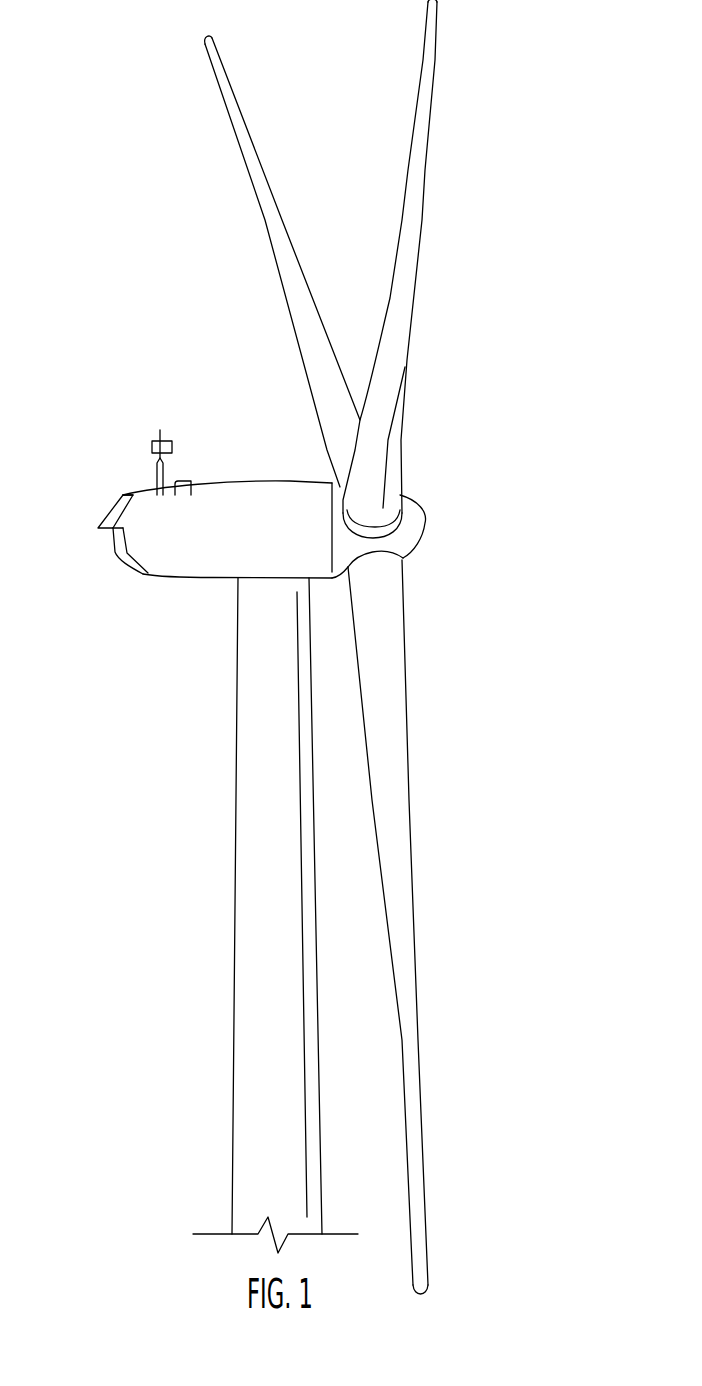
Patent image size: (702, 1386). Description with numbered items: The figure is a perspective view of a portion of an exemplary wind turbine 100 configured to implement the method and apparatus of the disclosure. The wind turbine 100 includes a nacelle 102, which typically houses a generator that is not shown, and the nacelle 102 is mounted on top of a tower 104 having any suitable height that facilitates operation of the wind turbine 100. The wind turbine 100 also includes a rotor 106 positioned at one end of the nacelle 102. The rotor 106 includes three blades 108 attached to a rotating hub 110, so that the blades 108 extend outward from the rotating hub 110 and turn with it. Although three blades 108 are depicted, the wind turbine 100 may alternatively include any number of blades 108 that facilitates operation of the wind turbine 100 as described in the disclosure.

The wind turbine 100 is at (106, 131).
The nacelle 102 is at (175, 578).
The tower 104 is at (235, 1000).
The rotor 106 is at (510, 362).
The blades 108 is at (247, 127).
The rotating hub 110 is at (428, 525).